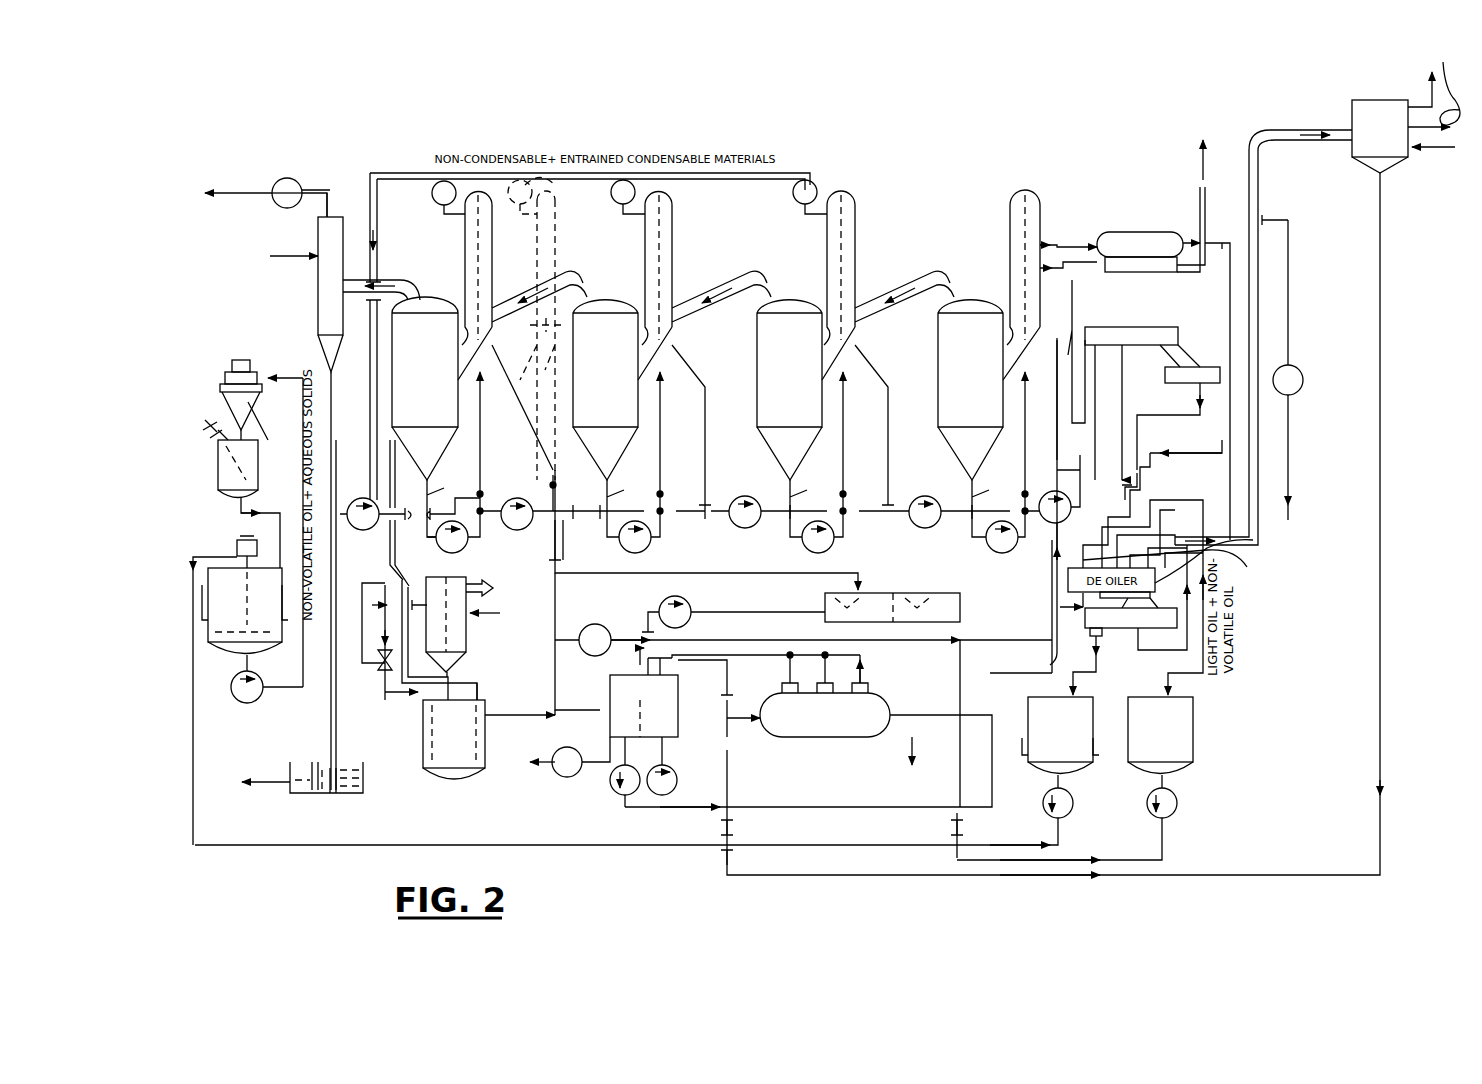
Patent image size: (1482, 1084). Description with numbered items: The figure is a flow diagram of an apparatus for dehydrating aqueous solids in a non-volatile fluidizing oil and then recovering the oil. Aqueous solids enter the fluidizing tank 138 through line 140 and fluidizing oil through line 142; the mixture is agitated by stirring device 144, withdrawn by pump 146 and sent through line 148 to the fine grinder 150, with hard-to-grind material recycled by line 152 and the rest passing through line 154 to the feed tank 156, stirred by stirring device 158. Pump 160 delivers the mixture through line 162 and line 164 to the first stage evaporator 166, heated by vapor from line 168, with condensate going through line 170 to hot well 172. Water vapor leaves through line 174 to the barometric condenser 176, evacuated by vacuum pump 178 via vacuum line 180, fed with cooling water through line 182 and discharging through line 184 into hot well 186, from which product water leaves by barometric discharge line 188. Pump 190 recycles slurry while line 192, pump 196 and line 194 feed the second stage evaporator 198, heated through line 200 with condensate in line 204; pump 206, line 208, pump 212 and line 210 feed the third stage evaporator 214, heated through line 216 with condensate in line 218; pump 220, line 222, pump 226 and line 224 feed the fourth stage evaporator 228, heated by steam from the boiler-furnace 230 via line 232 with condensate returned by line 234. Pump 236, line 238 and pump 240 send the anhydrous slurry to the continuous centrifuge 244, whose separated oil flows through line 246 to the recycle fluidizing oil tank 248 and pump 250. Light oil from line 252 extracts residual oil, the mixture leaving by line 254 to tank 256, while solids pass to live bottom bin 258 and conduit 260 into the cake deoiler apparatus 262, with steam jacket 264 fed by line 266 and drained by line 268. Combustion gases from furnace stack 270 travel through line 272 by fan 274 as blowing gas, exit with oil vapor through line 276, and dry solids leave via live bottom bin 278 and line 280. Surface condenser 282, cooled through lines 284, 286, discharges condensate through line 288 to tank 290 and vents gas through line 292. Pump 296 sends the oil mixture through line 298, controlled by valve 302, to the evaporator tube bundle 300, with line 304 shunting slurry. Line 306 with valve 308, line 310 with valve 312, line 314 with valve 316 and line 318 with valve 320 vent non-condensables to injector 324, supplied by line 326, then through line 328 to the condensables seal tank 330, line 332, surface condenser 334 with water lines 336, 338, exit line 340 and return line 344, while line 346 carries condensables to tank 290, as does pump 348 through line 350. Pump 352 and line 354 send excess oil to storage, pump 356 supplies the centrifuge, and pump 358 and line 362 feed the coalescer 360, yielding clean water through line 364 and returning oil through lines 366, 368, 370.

The fluidizing tank 138 is at (215, 645).
The line 140 is at (280, 540).
The line 142 is at (195, 758).
The stirring device 144 is at (235, 547).
The pump 146 is at (240, 702).
The line 148 is at (300, 687).
The fine grinder 150 is at (235, 364).
The line 152 is at (260, 383).
The line 154 is at (242, 414).
The feed tank 156 is at (218, 460).
The stirring device 158 is at (205, 408).
The pump 160 is at (363, 504).
The line 162 is at (397, 514).
The line 164 is at (476, 458).
The first stage evaporator 166 is at (462, 290).
The line 168 is at (524, 302).
The line 170 is at (518, 394).
The hot well 172 is at (958, 607).
The line 174 is at (390, 282).
The barometric condenser 176 is at (318, 294).
The vacuum pump 178 is at (280, 188).
The vacuum line 180 is at (321, 192).
The line 182 is at (297, 249).
The line 184 is at (333, 410).
The hot well 186 is at (362, 793).
The barometric discharge line 188 is at (263, 780).
The pump 190 is at (456, 542).
The line 192 is at (507, 518).
The line 194 is at (595, 536).
The pump 196 is at (518, 546).
The second stage evaporator 198 is at (676, 250).
The line 200 is at (692, 296).
The line 204 is at (686, 352).
The pump 206 is at (649, 548).
The line 208 is at (685, 510).
The line 210 is at (780, 482).
The pump 212 is at (757, 522).
The third stage evaporator 214 is at (825, 256).
The line 216 is at (877, 292).
The line 218 is at (866, 354).
The pump 220 is at (835, 546).
The line 222 is at (882, 510).
The line 224 is at (960, 465).
The pump 226 is at (929, 498).
The fourth stage evaporator 228 is at (1012, 220).
The boiler-furnace 230 is at (1130, 232).
The line 232 is at (1057, 246).
The line 234 is at (1005, 287).
The pump 236 is at (998, 544).
The line 238 is at (1052, 489).
The pump 240 is at (1050, 528).
The continuous centrifuge 244 is at (1155, 327).
The line 246 is at (1113, 382).
The recycle fluidizing oil tank 248 is at (1047, 692).
The pump 250 is at (1075, 800).
The line 252 is at (1080, 334).
The line 254 is at (1123, 418).
The tank 256 is at (1180, 758).
The live bottom bin 258 is at (1200, 367).
The conduit 260 is at (1136, 443).
The cake deoiler apparatus 262 is at (1227, 565).
The steam jacket 264 is at (1230, 548).
The line 266 is at (1230, 280).
The line 268 is at (1077, 306).
The furnace stack 270 is at (1195, 197).
The line 272 is at (1279, 220).
The fan 274 is at (1307, 393).
The line 276 is at (1313, 126).
The live bottom bin 278 is at (1130, 630).
The line 280 is at (1088, 661).
The surface condenser 282 is at (1357, 153).
The line 284 is at (1432, 150).
The line 286 is at (1436, 82).
The line 288 is at (1390, 236).
The tank 290 is at (673, 695).
The line 292 is at (1420, 83).
The pump 296 is at (1180, 800).
The line 298 is at (510, 374).
The evaporator tube bundle 300 is at (568, 254).
The valve 302 is at (593, 655).
The line 304 is at (536, 483).
The line 306 is at (700, 182).
The valve 308 is at (815, 186).
The line 310 is at (624, 210).
The valve 312 is at (613, 195).
The line 314 is at (516, 215).
The valve 316 is at (550, 192).
The line 318 is at (452, 218).
The valve 320 is at (441, 190).
The injector 324 is at (385, 685).
The line 326 is at (387, 650).
The line 328 is at (390, 723).
The condensables seal tank 330 is at (428, 770).
The line 332 is at (387, 568).
The surface condenser 334 is at (472, 650).
The line 336 is at (483, 618).
The line 338 is at (395, 600).
The line 340 is at (487, 593).
The line 344 is at (482, 685).
The line 346 is at (513, 715).
The pump 348 is at (692, 606).
The line 350 is at (640, 622).
The pump 352 is at (575, 774).
The line 354 is at (546, 758).
The pump 356 is at (610, 795).
The pump 358 is at (666, 785).
The coalescer 360 is at (826, 737).
The line 362 is at (680, 732).
The line 364 is at (890, 737).
The line 366 is at (863, 655).
The line 368 is at (820, 672).
The line 370 is at (860, 690).